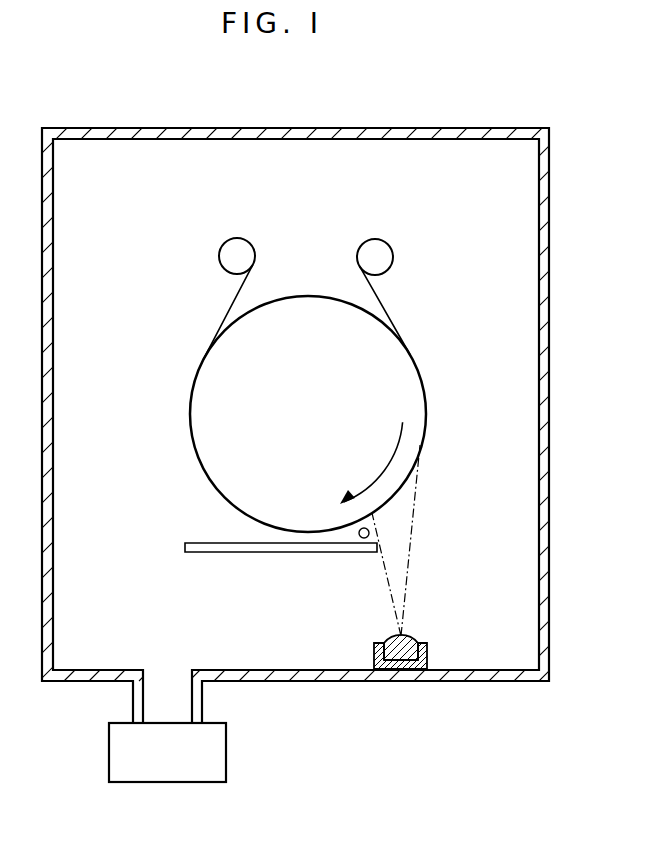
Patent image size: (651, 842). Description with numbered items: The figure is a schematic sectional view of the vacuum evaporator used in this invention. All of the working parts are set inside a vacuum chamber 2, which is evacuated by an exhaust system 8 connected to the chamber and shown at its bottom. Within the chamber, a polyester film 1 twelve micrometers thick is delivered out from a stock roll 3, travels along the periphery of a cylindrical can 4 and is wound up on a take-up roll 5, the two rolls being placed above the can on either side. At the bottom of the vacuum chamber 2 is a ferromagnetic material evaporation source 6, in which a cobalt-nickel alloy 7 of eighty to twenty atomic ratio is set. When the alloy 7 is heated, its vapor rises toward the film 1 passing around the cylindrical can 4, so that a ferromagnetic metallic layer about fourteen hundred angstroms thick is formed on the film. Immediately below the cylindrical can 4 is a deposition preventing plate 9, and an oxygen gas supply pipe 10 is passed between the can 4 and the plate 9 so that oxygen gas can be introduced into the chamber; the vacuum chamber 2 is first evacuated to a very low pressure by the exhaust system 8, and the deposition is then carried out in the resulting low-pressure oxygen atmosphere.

The polyester film 1 is at (383, 305).
The vacuum chamber 2 is at (551, 388).
The stock roll 3 is at (393, 257).
The cylindrical can 4 is at (424, 399).
The take-up roll 5 is at (219, 256).
The ferromagnetic material evaporation source 6 is at (428, 650).
The cobalt-nickel alloy 7 is at (411, 641).
The exhaust system 8 is at (227, 752).
The deposition preventing plate 9 is at (185, 550).
The oxygen gas supply pipe 10 is at (363, 538).